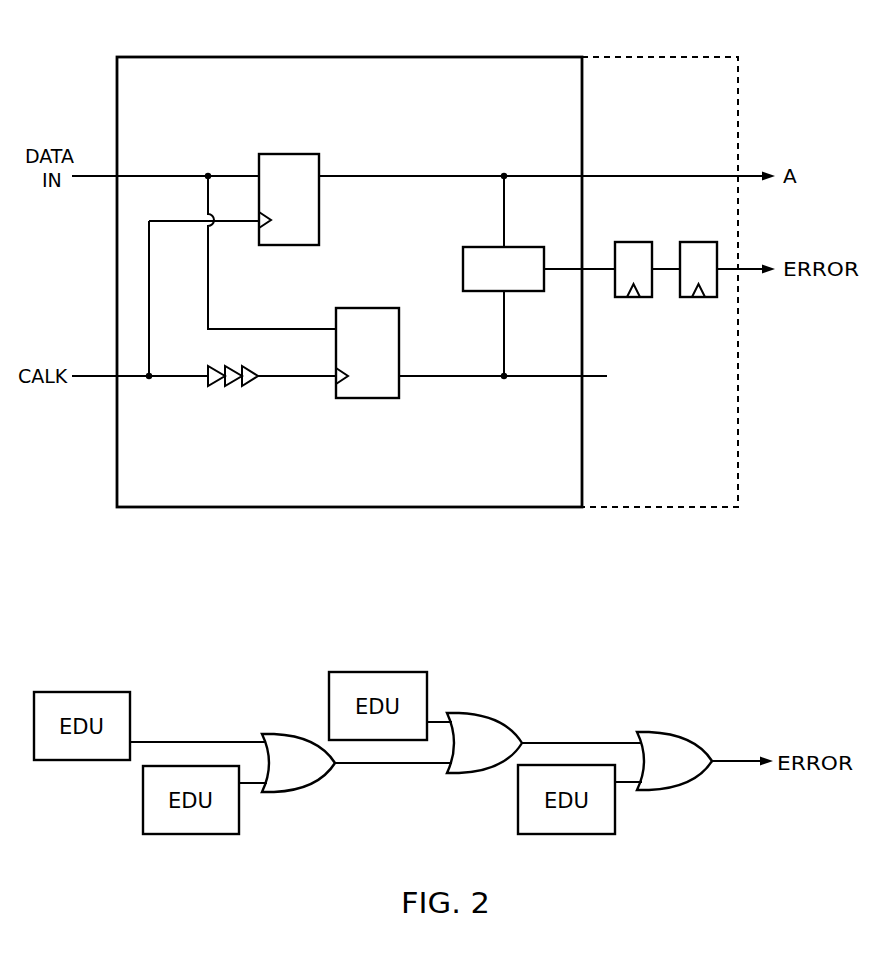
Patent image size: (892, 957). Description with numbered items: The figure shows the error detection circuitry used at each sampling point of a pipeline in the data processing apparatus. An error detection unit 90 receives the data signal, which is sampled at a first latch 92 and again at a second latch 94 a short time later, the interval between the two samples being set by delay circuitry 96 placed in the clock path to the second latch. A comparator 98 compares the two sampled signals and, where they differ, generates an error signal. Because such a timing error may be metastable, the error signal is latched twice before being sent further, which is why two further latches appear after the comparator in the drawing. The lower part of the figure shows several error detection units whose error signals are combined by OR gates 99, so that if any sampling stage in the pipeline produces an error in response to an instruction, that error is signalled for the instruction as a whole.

The error detection unit 90 is at (525, 57).
The latch 92 is at (289, 154).
The latch 94 is at (365, 308).
The delay circuitry 96 is at (258, 392).
The comparator 98 is at (522, 247).
The OR gates 99 is at (297, 792).